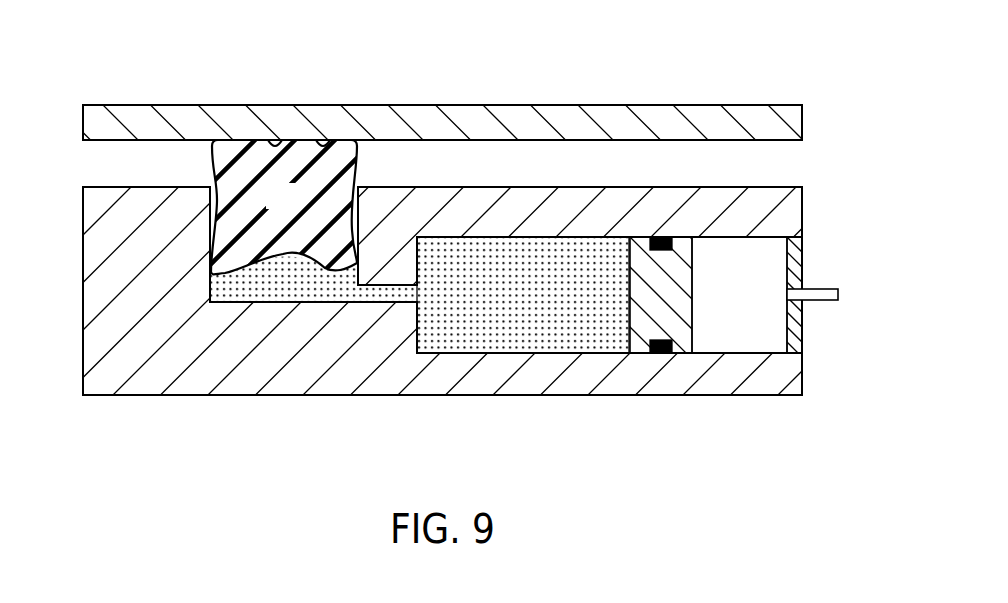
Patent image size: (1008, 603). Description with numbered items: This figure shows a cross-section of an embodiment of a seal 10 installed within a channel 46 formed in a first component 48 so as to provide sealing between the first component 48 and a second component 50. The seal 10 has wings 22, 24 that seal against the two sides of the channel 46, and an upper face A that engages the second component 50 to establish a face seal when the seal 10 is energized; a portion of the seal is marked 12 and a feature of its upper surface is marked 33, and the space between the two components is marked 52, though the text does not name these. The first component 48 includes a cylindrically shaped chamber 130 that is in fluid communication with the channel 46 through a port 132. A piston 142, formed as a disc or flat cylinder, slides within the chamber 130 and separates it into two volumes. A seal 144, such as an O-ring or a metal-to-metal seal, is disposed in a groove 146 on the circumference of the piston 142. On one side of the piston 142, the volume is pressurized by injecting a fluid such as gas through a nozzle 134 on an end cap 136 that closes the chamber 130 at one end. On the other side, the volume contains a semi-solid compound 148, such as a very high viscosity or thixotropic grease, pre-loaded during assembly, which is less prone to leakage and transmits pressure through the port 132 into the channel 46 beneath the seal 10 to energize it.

The seal 10 is at (650, 58).
The sample 12 is at (296, 206).
The wing 22 is at (215, 258).
The wing 24 is at (362, 258).
The sample top surface 33 is at (333, 147).
The face A is at (283, 148).
The channel 46 is at (228, 295).
The first component 48 is at (98, 343).
The second component 50 is at (136, 115).
The gap 52 is at (100, 164).
The chamber 130 is at (738, 350).
The port 132 is at (372, 296).
The nozzle 134 is at (820, 288).
The end cap 136 is at (798, 330).
The piston 142 is at (672, 270).
The seal 144 is at (663, 353).
The groove 146 is at (694, 237).
The semi-solid compound 148 is at (553, 330).